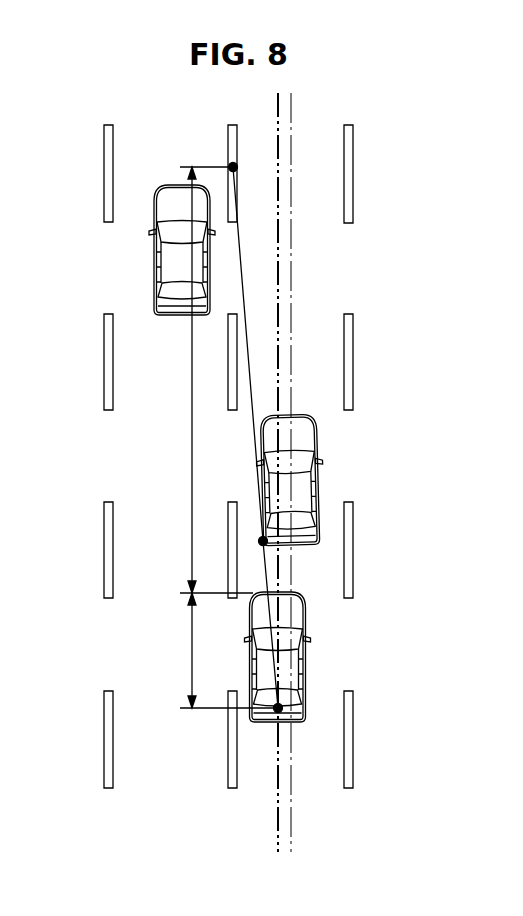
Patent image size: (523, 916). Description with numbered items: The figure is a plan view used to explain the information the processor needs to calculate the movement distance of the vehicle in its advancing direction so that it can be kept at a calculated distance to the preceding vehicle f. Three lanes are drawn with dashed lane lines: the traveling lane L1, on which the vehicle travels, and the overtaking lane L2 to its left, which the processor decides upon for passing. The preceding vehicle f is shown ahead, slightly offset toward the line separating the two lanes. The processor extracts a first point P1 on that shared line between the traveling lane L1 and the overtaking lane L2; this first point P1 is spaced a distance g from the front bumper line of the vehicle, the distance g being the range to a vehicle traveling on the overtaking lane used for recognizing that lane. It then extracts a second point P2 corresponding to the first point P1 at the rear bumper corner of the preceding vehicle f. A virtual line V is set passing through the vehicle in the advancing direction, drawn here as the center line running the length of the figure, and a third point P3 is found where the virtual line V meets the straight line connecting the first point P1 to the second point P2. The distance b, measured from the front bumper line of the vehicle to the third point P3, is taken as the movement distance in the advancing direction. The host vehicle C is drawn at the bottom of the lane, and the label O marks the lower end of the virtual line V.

The traveling lane L1 is at (310, 160).
The overtaking lane L2 is at (155, 160).
The first point P1 is at (233, 167).
The second point P2 is at (263, 541).
The third point P3 is at (293, 710).
The distance g is at (212, 380).
The distance b is at (225, 650).
The preceding vehicle f is at (307, 487).
The host vehicle C is at (303, 667).
The virtual line V is at (278, 838).
The origin O is at (293, 487).